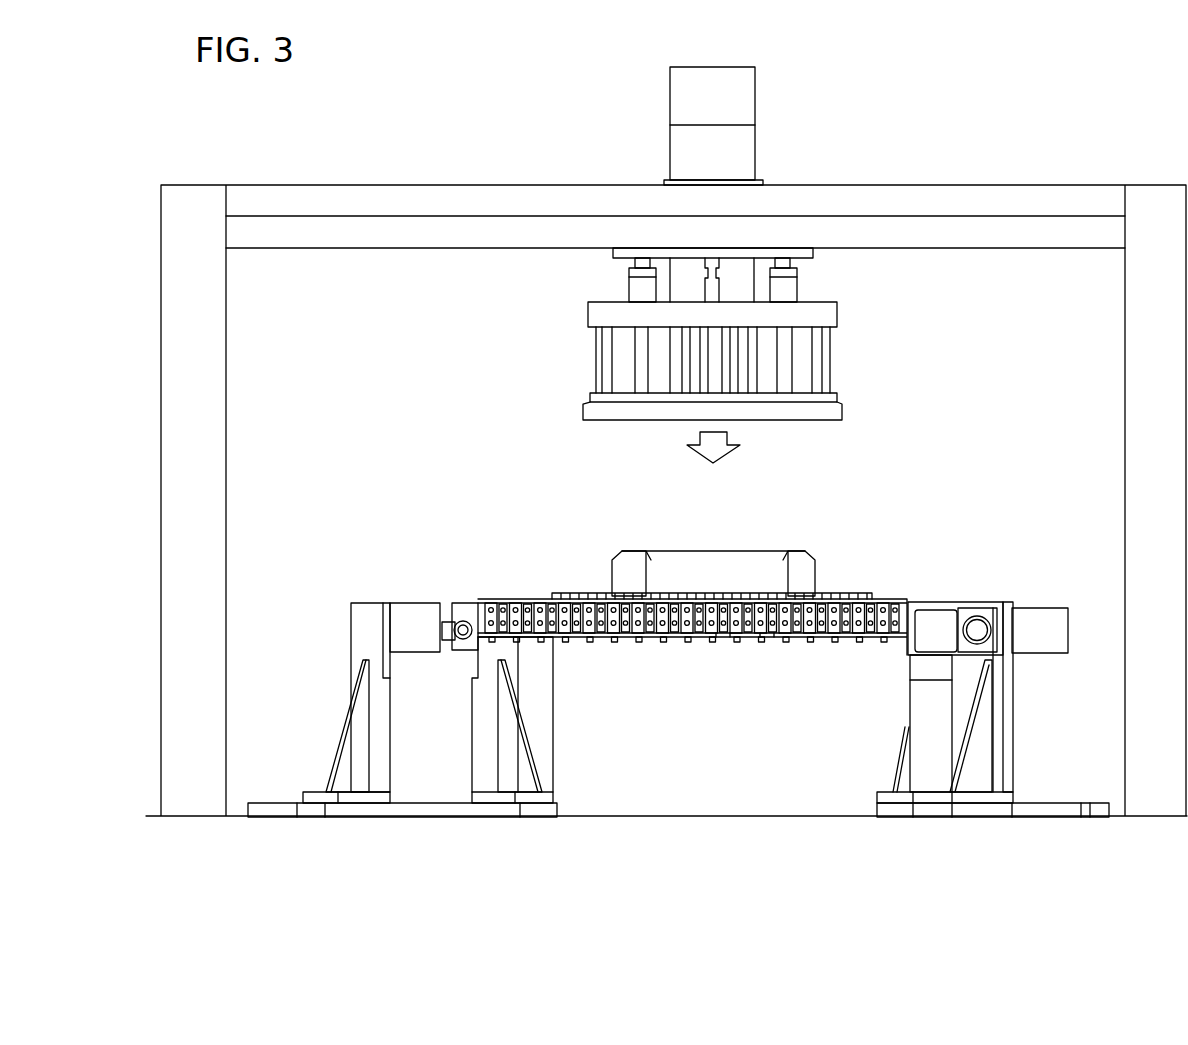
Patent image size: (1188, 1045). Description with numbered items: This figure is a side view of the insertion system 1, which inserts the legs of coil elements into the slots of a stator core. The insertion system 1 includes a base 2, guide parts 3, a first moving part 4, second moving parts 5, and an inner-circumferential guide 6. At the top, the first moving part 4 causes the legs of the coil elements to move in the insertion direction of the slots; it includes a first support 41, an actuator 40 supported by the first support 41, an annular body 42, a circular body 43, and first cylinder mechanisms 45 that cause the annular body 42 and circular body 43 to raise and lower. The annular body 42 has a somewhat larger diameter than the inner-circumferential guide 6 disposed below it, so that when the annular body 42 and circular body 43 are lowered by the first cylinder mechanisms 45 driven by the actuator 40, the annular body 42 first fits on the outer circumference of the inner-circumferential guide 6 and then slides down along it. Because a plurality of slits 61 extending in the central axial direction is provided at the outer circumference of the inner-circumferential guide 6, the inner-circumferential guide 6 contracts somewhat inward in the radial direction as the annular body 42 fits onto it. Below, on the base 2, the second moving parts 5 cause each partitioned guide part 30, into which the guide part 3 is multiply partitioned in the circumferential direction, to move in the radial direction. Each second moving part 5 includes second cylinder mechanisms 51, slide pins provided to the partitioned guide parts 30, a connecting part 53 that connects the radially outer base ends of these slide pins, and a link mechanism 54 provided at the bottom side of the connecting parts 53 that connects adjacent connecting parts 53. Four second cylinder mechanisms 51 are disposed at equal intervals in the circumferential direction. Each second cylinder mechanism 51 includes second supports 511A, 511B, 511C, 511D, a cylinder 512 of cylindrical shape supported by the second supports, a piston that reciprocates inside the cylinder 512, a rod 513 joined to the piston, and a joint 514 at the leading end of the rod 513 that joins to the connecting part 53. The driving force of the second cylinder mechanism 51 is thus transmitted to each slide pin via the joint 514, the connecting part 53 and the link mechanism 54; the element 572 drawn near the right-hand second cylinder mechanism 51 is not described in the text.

The insertion system 1 is at (666, 416).
The base 2 is at (713, 613).
The guide part 3 is at (856, 582).
The first moving part 4 is at (730, 264).
The second moving part 5 is at (679, 648).
The inner-circumferential guide 6 is at (713, 548).
The partitioned guide part 30 is at (833, 596).
The actuator 40 is at (730, 92).
The first support 41 is at (895, 202).
The annular body 42 is at (835, 413).
The circular body 43 is at (835, 313).
The first cylinder mechanism 45 is at (635, 285).
The second cylinder mechanism 51 is at (690, 627).
The connecting part 53 is at (927, 640).
The link mechanism 54 is at (767, 640).
The slit 61 is at (646, 551).
The second support 511A is at (917, 717).
The second support 511B is at (362, 645).
The second support 511C is at (520, 668).
The second support 511D is at (1012, 717).
The cylinder 512 is at (415, 612).
The rod 513 is at (445, 653).
The joint 514 is at (465, 646).
The bearing block 572 is at (1048, 624).